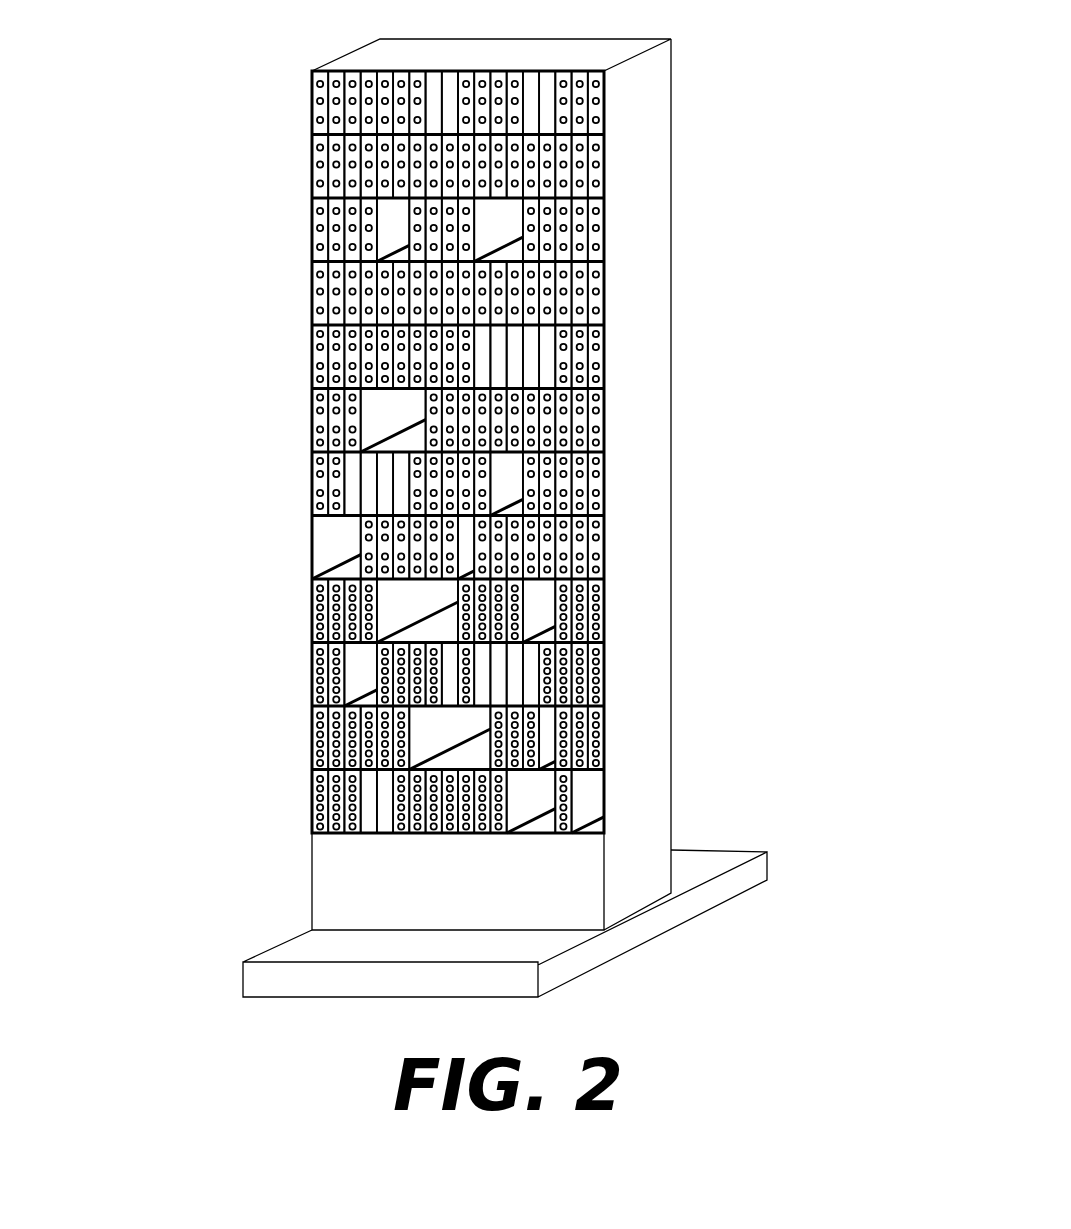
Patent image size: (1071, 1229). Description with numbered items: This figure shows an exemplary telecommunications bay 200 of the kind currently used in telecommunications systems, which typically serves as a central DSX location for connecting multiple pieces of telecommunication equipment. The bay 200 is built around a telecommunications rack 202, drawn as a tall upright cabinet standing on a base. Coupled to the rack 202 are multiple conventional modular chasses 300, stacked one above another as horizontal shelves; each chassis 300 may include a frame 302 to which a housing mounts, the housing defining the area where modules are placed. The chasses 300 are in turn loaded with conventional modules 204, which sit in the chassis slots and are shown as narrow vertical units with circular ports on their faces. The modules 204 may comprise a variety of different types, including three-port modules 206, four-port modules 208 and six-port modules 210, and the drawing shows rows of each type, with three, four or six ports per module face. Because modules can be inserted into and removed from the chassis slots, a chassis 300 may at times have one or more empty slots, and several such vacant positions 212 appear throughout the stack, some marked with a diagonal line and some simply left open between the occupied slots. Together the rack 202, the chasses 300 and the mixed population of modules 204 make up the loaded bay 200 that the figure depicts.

The telecommunications bay 200 is at (429, 498).
The telecommunications rack 202 is at (672, 57).
The modules 204 is at (416, 452).
The three-port module 206 is at (590, 290).
The four-port module 208 is at (588, 360).
The six-port module 210 is at (595, 602).
The empty slot 212 is at (353, 486).
The modular chassis 300 is at (416, 198).
The frame 302 is at (595, 742).